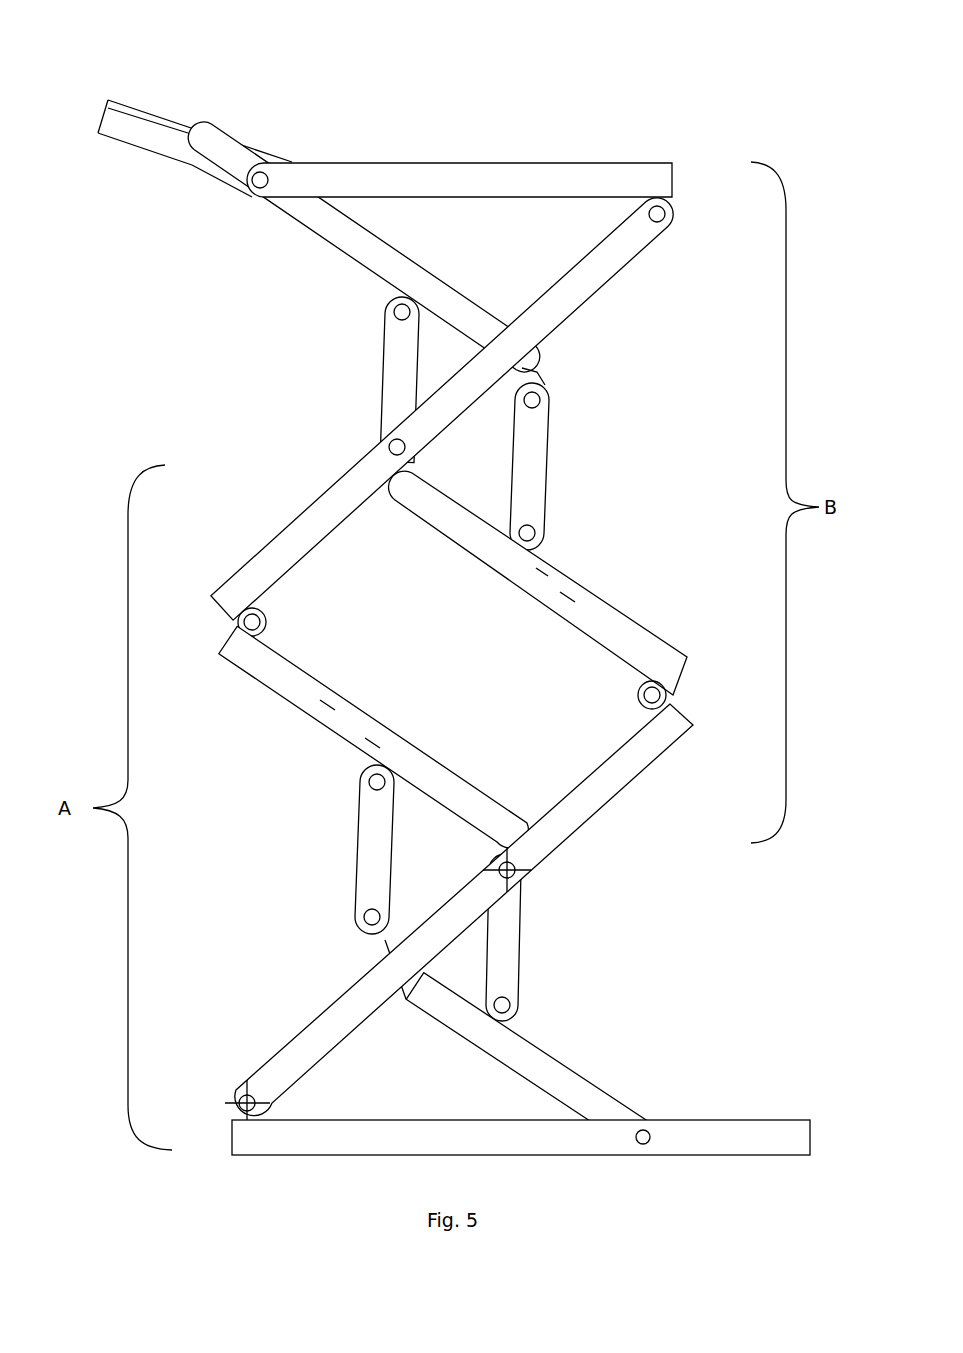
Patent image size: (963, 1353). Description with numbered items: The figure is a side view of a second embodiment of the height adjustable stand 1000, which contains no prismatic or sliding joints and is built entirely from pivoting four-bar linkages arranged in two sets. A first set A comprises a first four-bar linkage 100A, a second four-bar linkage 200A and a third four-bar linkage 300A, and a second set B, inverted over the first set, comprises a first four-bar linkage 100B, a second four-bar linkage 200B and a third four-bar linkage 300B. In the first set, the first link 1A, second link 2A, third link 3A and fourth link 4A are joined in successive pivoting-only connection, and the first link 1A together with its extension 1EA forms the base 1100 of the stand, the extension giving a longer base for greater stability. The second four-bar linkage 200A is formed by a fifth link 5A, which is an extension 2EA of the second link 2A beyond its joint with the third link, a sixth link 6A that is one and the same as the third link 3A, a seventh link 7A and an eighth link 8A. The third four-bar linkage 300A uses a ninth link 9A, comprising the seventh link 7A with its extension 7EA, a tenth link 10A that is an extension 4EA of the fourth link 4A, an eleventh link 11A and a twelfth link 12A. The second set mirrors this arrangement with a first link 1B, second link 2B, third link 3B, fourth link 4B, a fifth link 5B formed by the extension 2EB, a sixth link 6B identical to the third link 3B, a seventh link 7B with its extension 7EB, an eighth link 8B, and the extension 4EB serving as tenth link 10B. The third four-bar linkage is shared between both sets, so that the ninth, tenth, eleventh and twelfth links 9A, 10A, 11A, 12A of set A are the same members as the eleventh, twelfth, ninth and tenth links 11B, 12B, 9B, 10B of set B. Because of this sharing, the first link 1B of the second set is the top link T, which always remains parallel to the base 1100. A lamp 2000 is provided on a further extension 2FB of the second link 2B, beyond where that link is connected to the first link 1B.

The height adjustable stand 1000 is at (480, 666).
The base 1100 is at (521, 1166).
The lamp 2000 is at (141, 106).
The first four-bar linkage of first set 100A is at (480, 919).
The first four-bar linkage of second set 100B is at (457, 407).
The second four-bar linkage of first set 200A is at (314, 849).
The second four-bar linkage of second set 200B is at (592, 466).
The third four-bar linkage of first set 300A is at (339, 737).
The third four-bar linkage of second set 300B is at (571, 583).
The first link of first set 1A is at (521, 1166).
The extension of first link of first set 1EA is at (696, 1138).
The first link of second set 1B is at (459, 158).
The top link T is at (420, 185).
The second link of first set 2A is at (511, 1046).
The second link of second set 2B is at (354, 253).
The further extension of second link of second set 2FB is at (223, 157).
The extension of second link of first set 2EA is at (402, 1006).
The extension of second link of second set 2EB is at (503, 318).
The fifth link of first set 5A is at (428, 995).
The fifth link of second set 5B is at (473, 318).
The third link of first set 3A is at (548, 937).
The third link of second set 3B is at (345, 380).
The sixth link of first set 6A is at (505, 950).
The sixth link of second set 6B is at (402, 364).
The fourth link of first set 4A is at (500, 904).
The fourth link of second set 4B is at (418, 417).
The extension of fourth link of first set 4EA is at (676, 751).
The extension of fourth link of second set 4EB is at (231, 555).
The tenth link of first set 10A is at (676, 751).
The tenth link of second set 10B is at (231, 555).
The twelfth link of first set 12A is at (297, 542).
The twelfth link of second set 12B is at (577, 808).
The seventh link of first set 7A is at (339, 737).
The seventh link of second set 7B is at (571, 583).
The extension of seventh link of first set 7EA is at (327, 707).
The extension of seventh link of second set 7EB is at (571, 601).
The eighth link of first set 8A is at (382, 823).
The eighth link of second set 8B is at (532, 493).
The ninth link of first set 9A is at (285, 750).
The ninth link of second set 9B is at (614, 560).
The eleventh link of first set 11A is at (542, 567).
The eleventh link of second set 11B is at (370, 742).